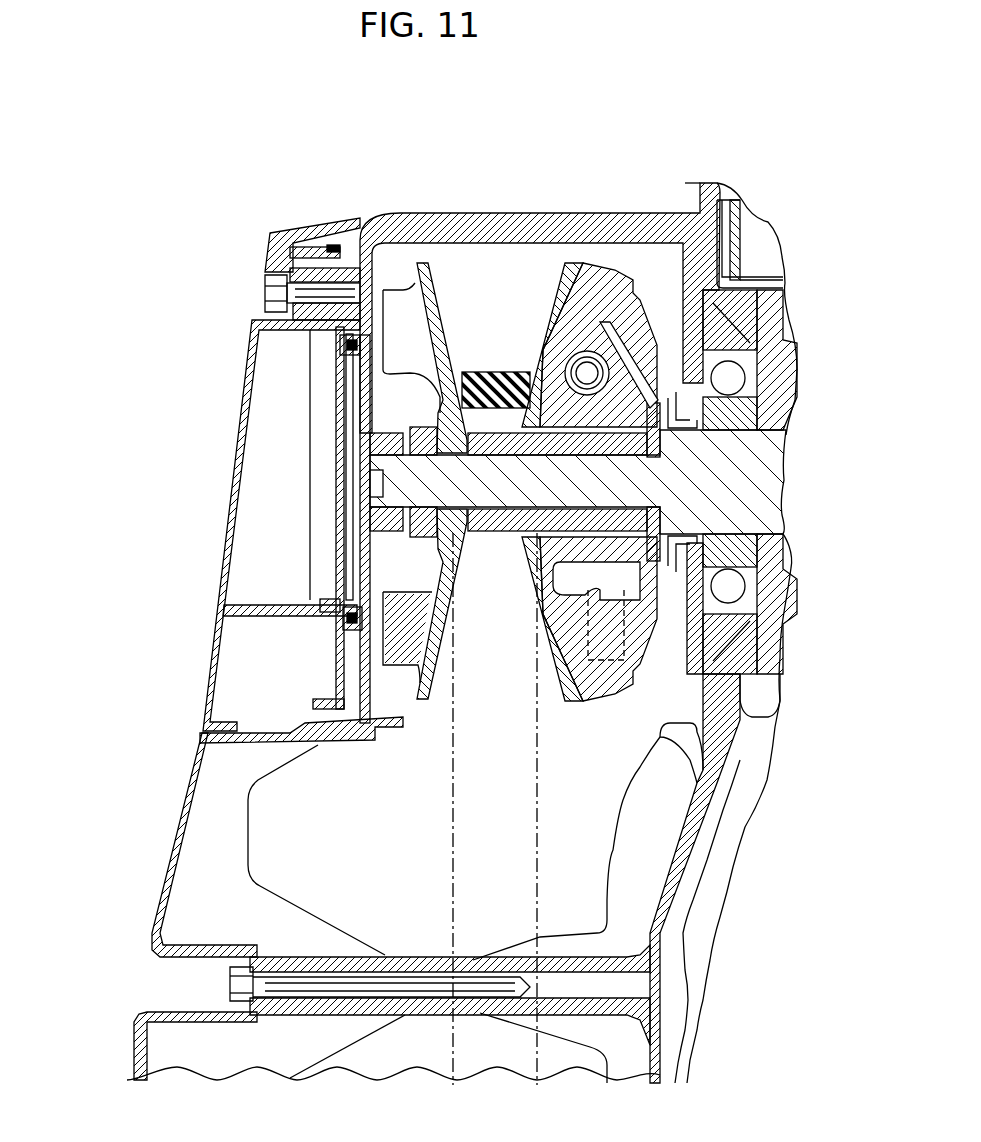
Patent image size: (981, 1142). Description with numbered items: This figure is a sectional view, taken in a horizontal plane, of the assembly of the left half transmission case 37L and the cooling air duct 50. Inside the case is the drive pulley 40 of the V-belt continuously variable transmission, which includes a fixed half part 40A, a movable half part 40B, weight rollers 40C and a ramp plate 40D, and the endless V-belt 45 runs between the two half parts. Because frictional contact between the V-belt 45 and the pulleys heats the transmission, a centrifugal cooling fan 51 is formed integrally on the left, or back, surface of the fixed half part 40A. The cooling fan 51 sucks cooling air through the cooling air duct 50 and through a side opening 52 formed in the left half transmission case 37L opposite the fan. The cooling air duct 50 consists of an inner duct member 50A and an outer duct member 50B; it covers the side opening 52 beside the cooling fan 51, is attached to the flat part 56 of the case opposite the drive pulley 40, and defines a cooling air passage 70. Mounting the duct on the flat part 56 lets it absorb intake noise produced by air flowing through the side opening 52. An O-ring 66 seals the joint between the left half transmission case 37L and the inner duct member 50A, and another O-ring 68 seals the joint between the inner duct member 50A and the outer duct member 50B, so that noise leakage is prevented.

The drive pulley 40 is at (727, 121).
The fixed half part 40A is at (425, 290).
The movable half part 40B is at (553, 282).
The weight rollers 40C is at (634, 282).
The ramp plate 40D is at (700, 232).
The V-belt 45 is at (537, 765).
The cooling fan 51 is at (403, 307).
The side opening 52 is at (362, 425).
The flat part 56 is at (358, 688).
The O-ring 66 is at (360, 345).
The O-ring 68 is at (318, 233).
The cooling air passage 70 is at (272, 400).
The cooling air duct 50 is at (90, 580).
The inner duct member 50A is at (337, 653).
The outer duct member 50B is at (226, 590).
The left half transmission case 37L is at (187, 777).